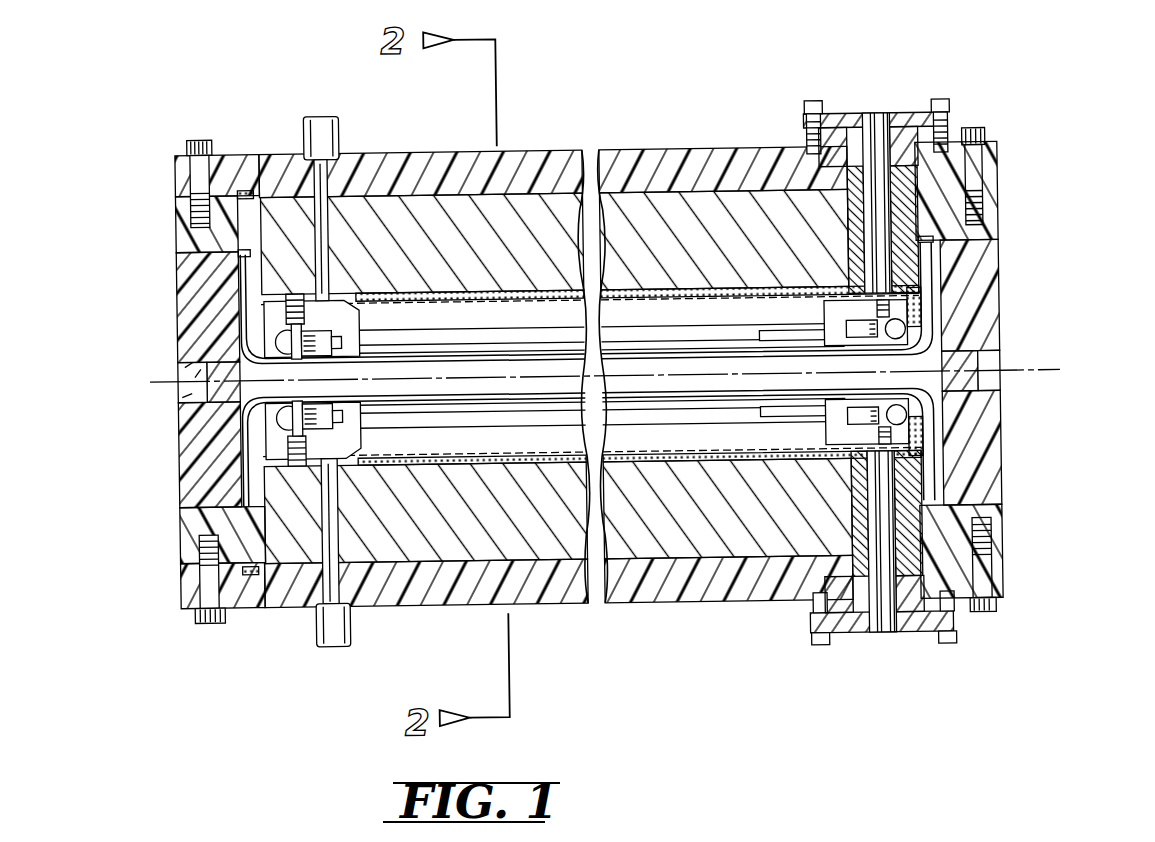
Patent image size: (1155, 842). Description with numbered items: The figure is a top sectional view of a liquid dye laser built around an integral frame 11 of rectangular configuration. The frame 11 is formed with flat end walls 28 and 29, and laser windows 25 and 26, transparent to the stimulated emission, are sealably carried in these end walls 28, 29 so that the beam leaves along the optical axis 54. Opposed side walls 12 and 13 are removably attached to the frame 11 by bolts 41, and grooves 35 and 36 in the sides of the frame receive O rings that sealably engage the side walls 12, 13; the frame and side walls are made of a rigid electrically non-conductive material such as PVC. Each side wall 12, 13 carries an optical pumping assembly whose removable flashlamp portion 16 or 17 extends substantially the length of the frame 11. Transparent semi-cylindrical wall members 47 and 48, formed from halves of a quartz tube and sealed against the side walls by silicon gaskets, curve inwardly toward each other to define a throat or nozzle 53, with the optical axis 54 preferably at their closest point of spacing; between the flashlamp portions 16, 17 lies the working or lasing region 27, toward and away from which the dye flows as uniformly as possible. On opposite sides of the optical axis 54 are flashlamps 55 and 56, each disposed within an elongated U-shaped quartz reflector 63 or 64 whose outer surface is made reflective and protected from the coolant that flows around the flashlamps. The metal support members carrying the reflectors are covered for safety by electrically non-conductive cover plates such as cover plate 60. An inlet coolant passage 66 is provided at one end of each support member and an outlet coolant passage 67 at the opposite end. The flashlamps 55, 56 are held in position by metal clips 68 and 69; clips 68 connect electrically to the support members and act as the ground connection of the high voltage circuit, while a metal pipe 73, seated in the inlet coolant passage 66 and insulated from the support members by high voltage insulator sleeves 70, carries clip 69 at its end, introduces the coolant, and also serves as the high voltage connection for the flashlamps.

The integral frame 11 is at (1040, 270).
The side wall 12 is at (178, 220).
The side wall 13 is at (180, 558).
The removable flashlamp portion 16 is at (690, 636).
The removable flashlamp portion 17 is at (734, 96).
The laser window 25 is at (1004, 382).
The laser window 26 is at (190, 384).
The working or lasing region 27 is at (488, 356).
The end wall 28 is at (1002, 315).
The end wall 29 is at (178, 332).
The groove 35 is at (256, 570).
The groove 36 is at (256, 186).
The bolt 41 is at (986, 132).
The transparent semi-cylindrical wall member 47 is at (946, 454).
The transparent semi-cylindrical wall member 48 is at (934, 291).
The throat or nozzle 53 is at (448, 398).
The optical axis 54 is at (1030, 376).
The flashlamp 55 is at (768, 426).
The flashlamp 56 is at (764, 334).
The electrically non-conductive cover plate 60 is at (641, 146).
The U-shaped reflector 63 is at (692, 456).
The U-shaped reflector 64 is at (666, 314).
The inlet coolant passage 66 is at (852, 224).
The outlet coolant passage 67 is at (344, 130).
The metal clip 68 is at (308, 332).
The metal clip 69 is at (848, 326).
The high voltage insulator sleeve 70 is at (804, 130).
The metal pipe 73 is at (884, 110).